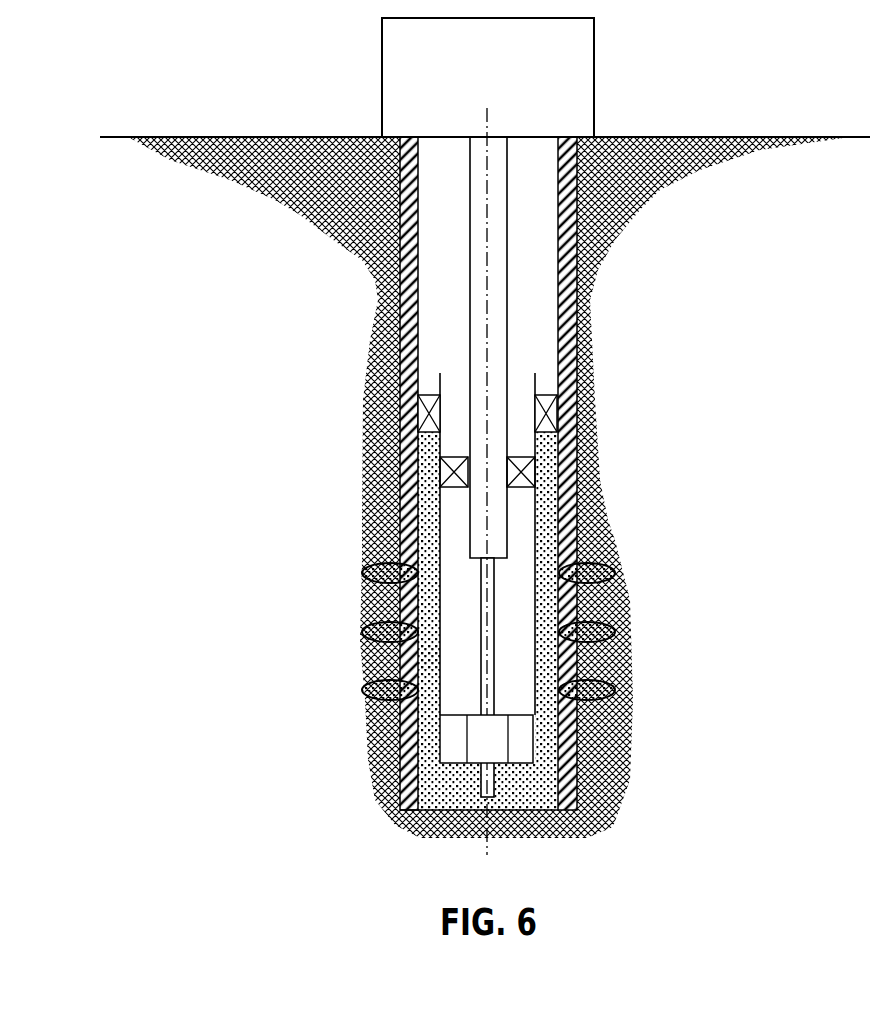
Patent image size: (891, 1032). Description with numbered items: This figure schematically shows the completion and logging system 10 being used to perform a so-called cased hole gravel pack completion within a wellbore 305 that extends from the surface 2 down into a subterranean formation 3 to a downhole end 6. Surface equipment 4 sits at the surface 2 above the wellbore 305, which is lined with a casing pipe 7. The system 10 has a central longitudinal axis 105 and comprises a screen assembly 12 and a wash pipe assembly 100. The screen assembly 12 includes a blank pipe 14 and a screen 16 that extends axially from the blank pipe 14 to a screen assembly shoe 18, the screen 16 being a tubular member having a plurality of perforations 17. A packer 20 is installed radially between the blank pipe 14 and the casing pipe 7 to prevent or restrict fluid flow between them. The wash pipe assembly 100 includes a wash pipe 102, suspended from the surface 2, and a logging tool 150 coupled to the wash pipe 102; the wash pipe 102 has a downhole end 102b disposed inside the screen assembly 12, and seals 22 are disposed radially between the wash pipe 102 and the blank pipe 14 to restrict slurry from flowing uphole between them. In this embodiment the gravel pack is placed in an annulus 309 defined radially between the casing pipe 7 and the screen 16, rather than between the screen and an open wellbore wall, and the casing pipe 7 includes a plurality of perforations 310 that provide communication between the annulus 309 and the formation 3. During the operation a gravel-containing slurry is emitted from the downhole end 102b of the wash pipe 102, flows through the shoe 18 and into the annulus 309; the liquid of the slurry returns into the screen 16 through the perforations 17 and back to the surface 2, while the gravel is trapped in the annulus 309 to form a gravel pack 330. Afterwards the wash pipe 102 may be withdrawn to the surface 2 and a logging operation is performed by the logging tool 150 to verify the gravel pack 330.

The surface 2 is at (790, 137).
The subterranean formation 3 is at (385, 750).
The surface equipment 4 is at (382, 50).
The downhole end 6 is at (416, 818).
The casing pipe 7 is at (577, 282).
The completion and logging system 10 is at (600, 496).
The screen assembly 12 is at (551, 448).
The blank pipe 14 is at (432, 381).
The screen 16 is at (429, 518).
The perforations 17 is at (429, 593).
The screen assembly shoe 18 is at (533, 747).
The packer 20 is at (535, 385).
The seals 22 is at (447, 448).
The wash pipe assembly 100 is at (518, 247).
The wash pipe 102 is at (400, 243).
The downhole end 102b is at (520, 567).
The longitudinal axis 105 is at (488, 178).
The logging tool 150 is at (495, 693).
The wellbore 305 is at (696, 356).
The annulus 309 is at (415, 656).
The perforations 310 is at (385, 565).
The gravel pack 330 is at (537, 797).